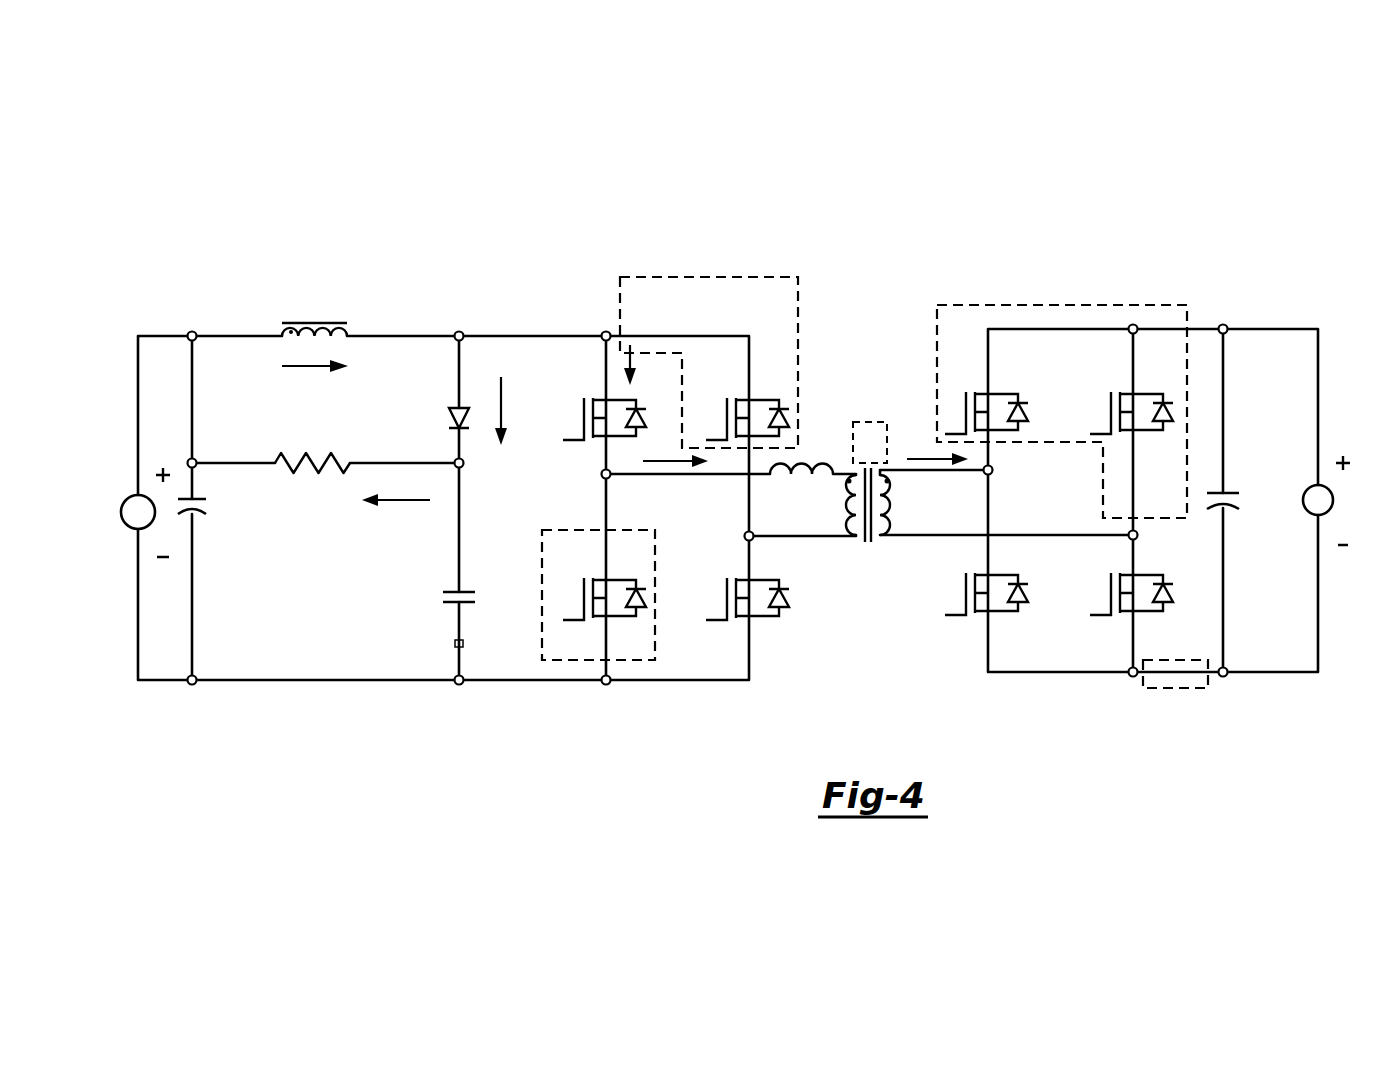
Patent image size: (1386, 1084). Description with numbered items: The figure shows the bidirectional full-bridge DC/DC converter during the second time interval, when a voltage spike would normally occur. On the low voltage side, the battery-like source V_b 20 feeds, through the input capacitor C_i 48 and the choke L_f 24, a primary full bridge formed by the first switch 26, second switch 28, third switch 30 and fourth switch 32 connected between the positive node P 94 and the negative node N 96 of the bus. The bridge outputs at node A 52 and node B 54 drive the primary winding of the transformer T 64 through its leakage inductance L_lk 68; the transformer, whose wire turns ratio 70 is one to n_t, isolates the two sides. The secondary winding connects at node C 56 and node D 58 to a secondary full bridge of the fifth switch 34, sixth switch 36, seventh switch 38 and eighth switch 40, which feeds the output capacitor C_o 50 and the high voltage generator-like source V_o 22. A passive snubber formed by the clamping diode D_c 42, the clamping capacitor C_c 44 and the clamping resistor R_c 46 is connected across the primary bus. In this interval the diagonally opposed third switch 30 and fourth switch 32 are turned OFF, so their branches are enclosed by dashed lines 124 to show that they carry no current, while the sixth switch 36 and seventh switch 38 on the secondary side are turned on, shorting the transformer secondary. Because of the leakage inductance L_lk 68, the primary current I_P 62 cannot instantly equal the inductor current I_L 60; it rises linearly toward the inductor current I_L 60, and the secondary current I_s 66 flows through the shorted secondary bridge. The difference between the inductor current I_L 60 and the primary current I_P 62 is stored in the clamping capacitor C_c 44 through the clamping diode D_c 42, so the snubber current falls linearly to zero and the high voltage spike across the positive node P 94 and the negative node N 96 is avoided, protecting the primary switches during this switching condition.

The V_b 20 is at (108, 465).
The V_o 22 is at (1372, 465).
The choke L_f 24 is at (282, 281).
The switch S1 26 is at (567, 400).
The switch S2 28 is at (708, 601).
The switch S3 30 is at (553, 600).
The switch S4 32 is at (712, 388).
The switch S5 34 is at (953, 398).
The switch S6 36 is at (1073, 597).
The switch S7 38 is at (935, 605).
The switch S8 40 is at (1097, 400).
The clamping diode D_c 42 is at (400, 408).
The clamping capacitor C_c 44 is at (425, 582).
The clamping resistor R_c 46 is at (300, 535).
The input capacitor C_i 48 is at (238, 545).
The output capacitor C_o 50 is at (1273, 512).
The node A 52 is at (571, 475).
The node B 54 is at (727, 520).
The node C 56 is at (1020, 474).
The node D 58 is at (1167, 543).
The inductor current I_L 60 is at (288, 397).
The primary current I_P 62 is at (672, 420).
The transformer T 64 is at (883, 446).
The transformer secondary current I_s 66 is at (918, 424).
The transformer leakage inductance L_lk 68 is at (814, 416).
The ratio of transformer wire turns 1:n_t 70 is at (875, 583).
The positive node P 94 is at (460, 306).
The negative node N 96 is at (447, 718).
The dashed lines 124 is at (798, 278).